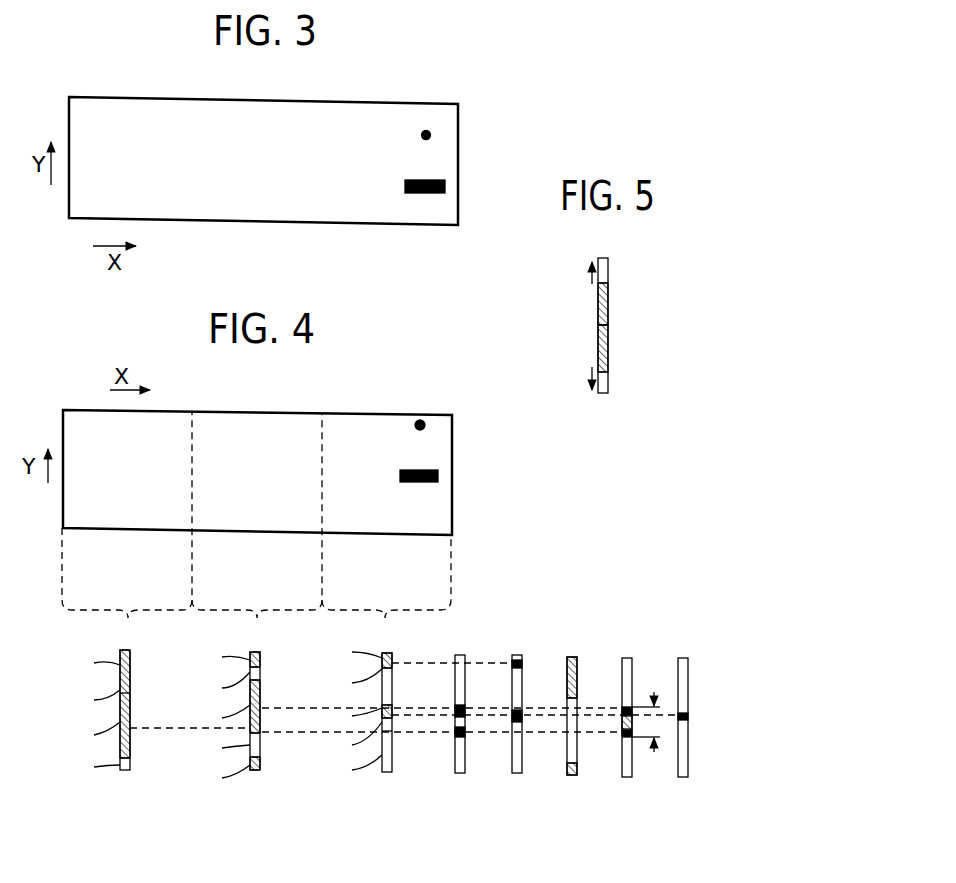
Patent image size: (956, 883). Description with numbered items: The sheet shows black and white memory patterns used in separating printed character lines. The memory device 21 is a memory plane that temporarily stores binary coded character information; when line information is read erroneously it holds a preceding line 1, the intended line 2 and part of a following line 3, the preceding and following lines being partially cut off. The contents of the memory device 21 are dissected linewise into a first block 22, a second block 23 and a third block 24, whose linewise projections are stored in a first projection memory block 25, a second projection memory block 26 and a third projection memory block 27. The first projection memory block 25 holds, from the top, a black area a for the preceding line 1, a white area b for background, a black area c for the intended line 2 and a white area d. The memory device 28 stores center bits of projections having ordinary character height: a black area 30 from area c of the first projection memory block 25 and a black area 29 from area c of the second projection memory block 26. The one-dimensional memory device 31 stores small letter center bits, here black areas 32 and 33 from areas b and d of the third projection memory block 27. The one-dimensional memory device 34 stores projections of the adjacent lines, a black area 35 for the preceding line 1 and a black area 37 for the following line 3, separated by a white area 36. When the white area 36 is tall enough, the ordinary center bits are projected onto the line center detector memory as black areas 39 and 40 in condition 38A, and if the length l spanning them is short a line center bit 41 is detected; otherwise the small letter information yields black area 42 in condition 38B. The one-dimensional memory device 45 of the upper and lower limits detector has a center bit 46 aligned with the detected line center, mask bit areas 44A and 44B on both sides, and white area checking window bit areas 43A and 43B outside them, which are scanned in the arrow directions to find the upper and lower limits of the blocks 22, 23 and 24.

In FIG. 3, the preceding line 1 is at (86, 125).
In FIG. 4, the preceding line 1 is at (78, 435).
In FIG. 3, the intended line 2 is at (86, 207).
In FIG. 4, the intended line 2 is at (81, 508).
In FIG. 4, the following line 3 is at (250, 525).
In FIG. 3, the memory device 21 is at (332, 88).
In FIG. 4, the memory device 21 is at (270, 413).
In FIG. 4, the first block 22 is at (117, 532).
In FIG. 4, the second block 23 is at (245, 533).
In FIG. 4, the third block 24 is at (378, 535).
In FIG. 4, the first projection memory block 25 is at (125, 770).
In FIG. 4, the second projection memory block 26 is at (255, 770).
In FIG. 4, the third projection memory block 27 is at (386, 772).
In FIG. 4, the memory device 28 is at (457, 749).
In FIG. 4, the black area 29 is at (465, 705).
In FIG. 4, the black area 30 is at (455, 735).
In FIG. 4, the one-dimensional memory device 31 is at (526, 731).
In FIG. 4, the black area 32 is at (517, 655).
In FIG. 4, the black area 33 is at (534, 741).
In FIG. 4, the one-dimensional memory device 34 is at (559, 735).
In FIG. 4, the black area 35 is at (567, 670).
In FIG. 4, the white area 36 is at (567, 725).
In FIG. 4, the black area 37 is at (567, 770).
In FIG. 4, the condition of one-dimensional memory device 38A is at (622, 744).
In FIG. 4, the condition of one-dimensional memory device 38B is at (678, 752).
In FIG. 4, the black area 39 is at (622, 709).
In FIG. 4, the black area 40 is at (622, 735).
In FIG. 4, the line center bit 41 is at (622, 722).
In FIG. 4, the black area 42 is at (678, 715).
In FIG. 5, the white area checking window bit area 43A is at (608, 270).
In FIG. 5, the white area checking window bit area 43B is at (608, 380).
In FIG. 5, the mask bit area 44A is at (598, 300).
In FIG. 5, the mask bit area 44B is at (598, 355).
In FIG. 5, the one-dimensional memory device 45 is at (602, 349).
In FIG. 5, the center bit 46 is at (608, 325).